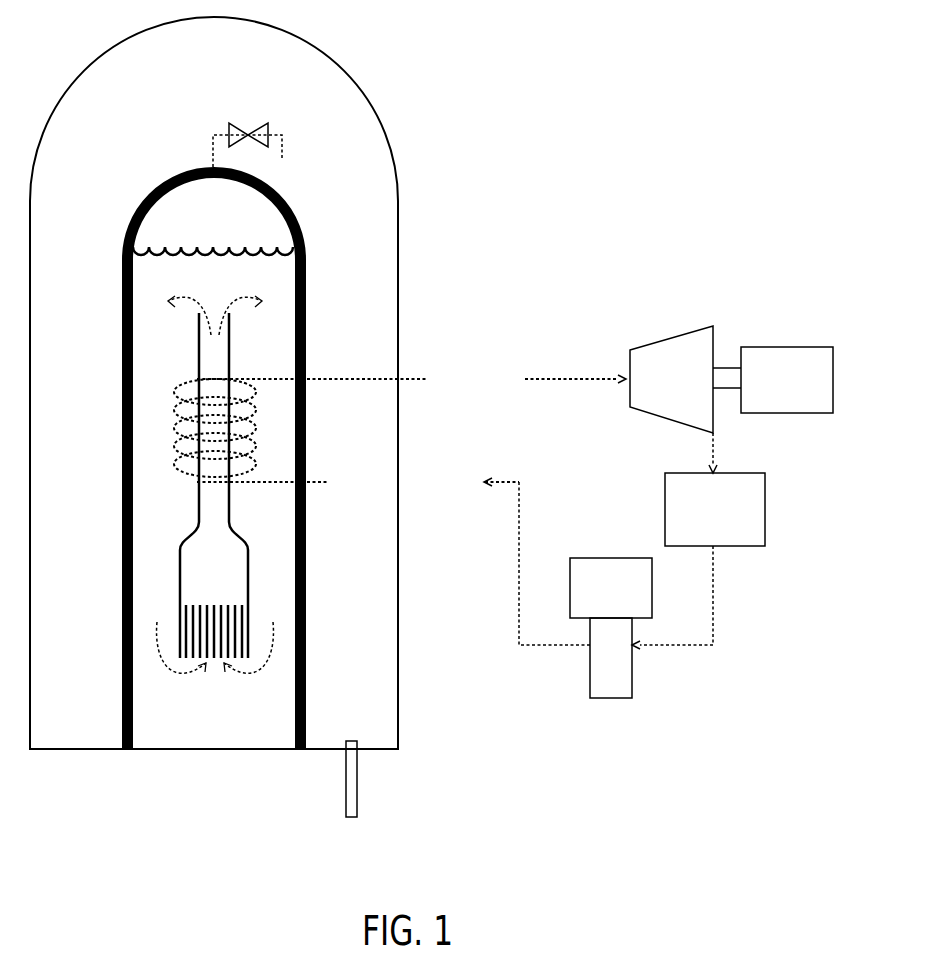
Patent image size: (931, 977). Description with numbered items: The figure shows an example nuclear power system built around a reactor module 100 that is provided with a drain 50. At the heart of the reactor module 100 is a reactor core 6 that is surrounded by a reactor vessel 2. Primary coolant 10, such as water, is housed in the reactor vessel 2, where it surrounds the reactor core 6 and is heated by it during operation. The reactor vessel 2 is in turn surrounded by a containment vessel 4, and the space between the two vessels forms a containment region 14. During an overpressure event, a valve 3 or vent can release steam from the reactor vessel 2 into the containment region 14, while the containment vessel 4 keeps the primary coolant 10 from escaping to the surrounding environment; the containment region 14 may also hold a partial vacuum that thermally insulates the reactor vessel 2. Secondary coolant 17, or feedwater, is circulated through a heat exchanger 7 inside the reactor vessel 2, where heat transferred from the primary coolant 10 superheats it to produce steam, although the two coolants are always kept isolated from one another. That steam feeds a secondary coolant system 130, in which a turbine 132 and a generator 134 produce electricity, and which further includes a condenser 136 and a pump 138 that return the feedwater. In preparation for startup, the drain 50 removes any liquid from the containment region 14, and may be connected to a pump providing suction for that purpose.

The reactor module 100 is at (452, 76).
The reactor vessel 2 is at (291, 211).
The valve 3 is at (240, 128).
The containment vessel 4 is at (398, 193).
The reactor core 6 is at (182, 610).
The heat exchanger 7 is at (177, 432).
The primary coolant 10 is at (227, 726).
The containment region 14 is at (165, 104).
The secondary coolant 17 is at (465, 467).
The drain 50 is at (357, 790).
The secondary coolant system 130 is at (664, 312).
The turbine 132 is at (688, 389).
The generator 134 is at (807, 389).
The condenser 136 is at (727, 524).
The pump 138 is at (628, 598).